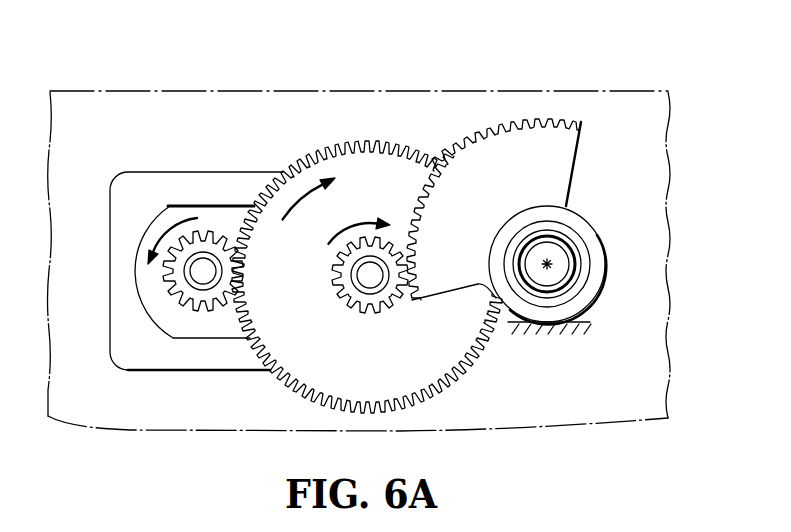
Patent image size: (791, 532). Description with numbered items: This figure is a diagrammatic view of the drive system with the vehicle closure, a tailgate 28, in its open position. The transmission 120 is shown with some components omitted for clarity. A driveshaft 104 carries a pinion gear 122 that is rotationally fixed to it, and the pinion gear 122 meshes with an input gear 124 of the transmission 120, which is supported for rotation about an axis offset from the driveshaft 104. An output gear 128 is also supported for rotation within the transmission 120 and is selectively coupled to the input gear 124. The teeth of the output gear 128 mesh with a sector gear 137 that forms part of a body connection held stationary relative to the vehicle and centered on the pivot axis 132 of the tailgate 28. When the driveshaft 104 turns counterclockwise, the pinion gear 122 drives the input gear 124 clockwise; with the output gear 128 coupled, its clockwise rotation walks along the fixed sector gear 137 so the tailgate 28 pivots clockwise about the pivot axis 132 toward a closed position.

The tailgate 28 is at (320, 90).
The transmission 120 is at (445, 57).
The driveshaft 104 is at (204, 268).
The pinion gear 122 is at (190, 320).
The input gear 124 is at (472, 362).
The output gear 128 is at (370, 300).
The pivot axis 132 is at (550, 266).
The sector gear 137 is at (570, 181).